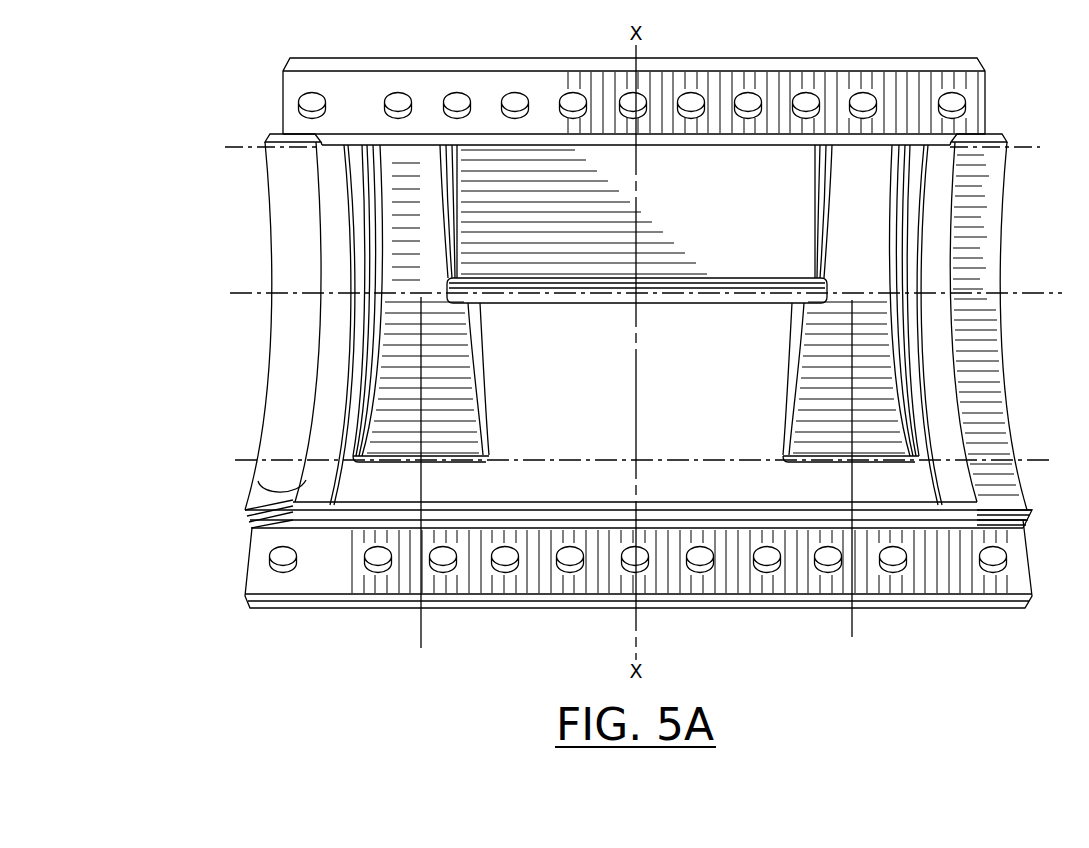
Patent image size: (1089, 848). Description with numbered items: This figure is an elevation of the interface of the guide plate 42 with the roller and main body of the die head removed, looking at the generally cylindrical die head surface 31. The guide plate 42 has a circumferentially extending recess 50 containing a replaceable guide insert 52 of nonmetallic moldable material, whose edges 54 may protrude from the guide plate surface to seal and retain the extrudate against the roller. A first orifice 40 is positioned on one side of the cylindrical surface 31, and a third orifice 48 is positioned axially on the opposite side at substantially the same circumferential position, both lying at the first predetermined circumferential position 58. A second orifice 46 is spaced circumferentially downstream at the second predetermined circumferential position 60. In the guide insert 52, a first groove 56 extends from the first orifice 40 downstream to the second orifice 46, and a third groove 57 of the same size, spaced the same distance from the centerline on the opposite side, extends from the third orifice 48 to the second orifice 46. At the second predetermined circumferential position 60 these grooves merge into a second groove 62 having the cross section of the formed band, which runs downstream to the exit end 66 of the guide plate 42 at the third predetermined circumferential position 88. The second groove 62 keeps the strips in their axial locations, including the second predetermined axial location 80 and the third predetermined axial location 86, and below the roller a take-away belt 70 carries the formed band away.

The cylindrical die head surface 31 is at (714, 442).
The first orifice 40 is at (858, 462).
The guide plate 42 is at (268, 207).
The second orifice 46 is at (582, 296).
The third orifice 48 is at (412, 463).
The circumferentially extending recess 50 is at (266, 489).
The guide insert 52 is at (325, 521).
The edges of the guide insert 54 is at (940, 280).
The first groove 56 is at (812, 385).
The third groove 57 is at (460, 405).
The first predetermined circumferential position 58 is at (247, 460).
The second predetermined circumferential position 60 is at (285, 293).
The second groove 62 is at (647, 258).
The exit end of the guide plate 66 is at (287, 138).
The take-away belt 70 is at (855, 637).
The second predetermined axial location 80 is at (678, 64).
The third predetermined axial location 86 is at (424, 624).
The third predetermined circumferential position 88 is at (245, 147).